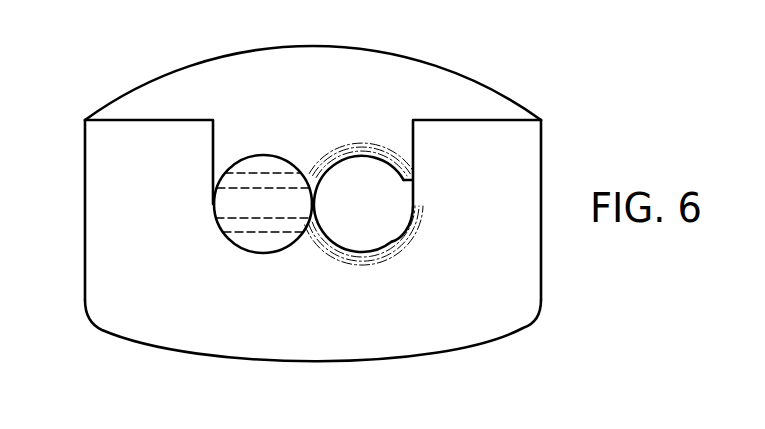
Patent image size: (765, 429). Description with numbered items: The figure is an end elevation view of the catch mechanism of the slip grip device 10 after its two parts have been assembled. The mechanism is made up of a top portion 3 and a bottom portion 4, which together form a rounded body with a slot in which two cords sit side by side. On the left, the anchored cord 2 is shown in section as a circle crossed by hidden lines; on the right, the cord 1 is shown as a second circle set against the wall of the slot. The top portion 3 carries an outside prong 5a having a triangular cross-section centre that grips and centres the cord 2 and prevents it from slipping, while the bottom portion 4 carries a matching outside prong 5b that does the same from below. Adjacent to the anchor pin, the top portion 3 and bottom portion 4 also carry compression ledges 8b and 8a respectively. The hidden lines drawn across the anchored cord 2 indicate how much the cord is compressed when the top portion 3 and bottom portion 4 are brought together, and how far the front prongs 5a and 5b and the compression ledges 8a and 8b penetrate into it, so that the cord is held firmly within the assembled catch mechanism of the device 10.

The slip grip device 10 is at (285, 211).
The top portion 3 is at (398, 64).
The bottom portion 4 is at (355, 350).
The cord 2 is at (233, 206).
The second cylindrical member 1 is at (372, 215).
The outside prong 5a is at (243, 183).
The outside prong 5b is at (247, 227).
The compression ledge 8a is at (267, 242).
The compression ledge 8b is at (268, 164).